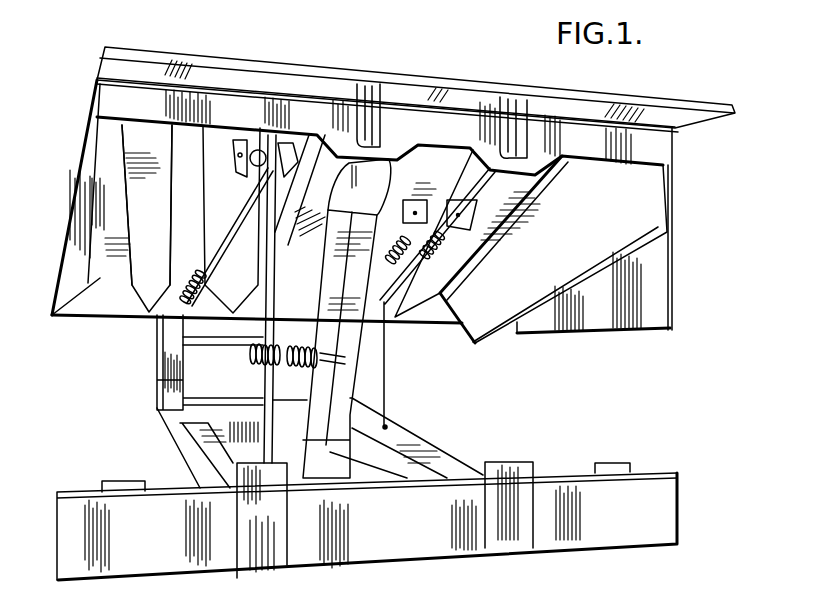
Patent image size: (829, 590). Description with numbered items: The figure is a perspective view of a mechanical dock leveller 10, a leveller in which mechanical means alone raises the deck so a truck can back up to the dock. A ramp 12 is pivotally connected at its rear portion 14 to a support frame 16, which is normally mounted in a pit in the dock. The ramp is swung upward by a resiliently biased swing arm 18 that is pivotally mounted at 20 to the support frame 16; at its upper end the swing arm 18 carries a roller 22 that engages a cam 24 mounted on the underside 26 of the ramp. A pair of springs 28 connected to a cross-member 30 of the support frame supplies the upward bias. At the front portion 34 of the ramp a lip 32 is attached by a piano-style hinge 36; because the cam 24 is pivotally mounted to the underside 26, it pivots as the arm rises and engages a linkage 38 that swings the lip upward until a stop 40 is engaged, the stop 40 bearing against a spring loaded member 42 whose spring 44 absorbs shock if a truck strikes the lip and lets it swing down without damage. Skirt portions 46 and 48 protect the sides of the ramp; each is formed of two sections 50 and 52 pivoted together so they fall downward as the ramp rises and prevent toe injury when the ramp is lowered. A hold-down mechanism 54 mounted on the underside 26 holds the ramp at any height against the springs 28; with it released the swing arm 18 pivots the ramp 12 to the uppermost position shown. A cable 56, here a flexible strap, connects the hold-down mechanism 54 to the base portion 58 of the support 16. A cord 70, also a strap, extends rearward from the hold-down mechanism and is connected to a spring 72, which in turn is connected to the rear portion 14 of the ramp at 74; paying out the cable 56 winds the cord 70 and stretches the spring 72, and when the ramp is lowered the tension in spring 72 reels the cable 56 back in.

The mechanical dock leveller 10 is at (657, 78).
The ramp 12 is at (143, 150).
The rear portion 14 is at (175, 303).
The support frame 16 is at (186, 420).
The swing arm 18 is at (341, 326).
The pivot 20 is at (348, 437).
The roller 22 is at (393, 197).
The cam 24 is at (352, 177).
The underside 26 is at (323, 167).
The springs 28 is at (297, 342).
The cross-member 30 is at (230, 343).
The lip 32 is at (435, 86).
The front portion 34 is at (198, 108).
The piano-style hinge 36 is at (233, 85).
The linkage 38 is at (380, 90).
The stop 40 is at (512, 112).
The spring loaded member 42 is at (468, 194).
The spring 44 is at (440, 250).
The skirt portion 46 is at (78, 200).
The skirt portion 48 is at (682, 233).
The skirt section 50 is at (670, 192).
The skirt section 52 is at (657, 303).
The hold-down mechanism 54 is at (236, 165).
The cable 56 is at (270, 243).
The base portion 58 is at (208, 452).
The cord 70 is at (222, 240).
The spring 72 is at (188, 278).
The connection point 74 is at (193, 320).